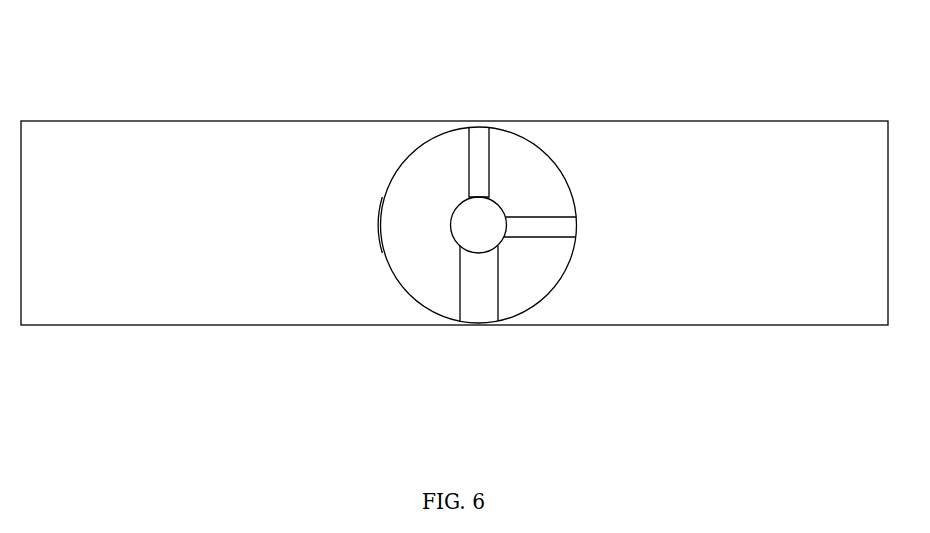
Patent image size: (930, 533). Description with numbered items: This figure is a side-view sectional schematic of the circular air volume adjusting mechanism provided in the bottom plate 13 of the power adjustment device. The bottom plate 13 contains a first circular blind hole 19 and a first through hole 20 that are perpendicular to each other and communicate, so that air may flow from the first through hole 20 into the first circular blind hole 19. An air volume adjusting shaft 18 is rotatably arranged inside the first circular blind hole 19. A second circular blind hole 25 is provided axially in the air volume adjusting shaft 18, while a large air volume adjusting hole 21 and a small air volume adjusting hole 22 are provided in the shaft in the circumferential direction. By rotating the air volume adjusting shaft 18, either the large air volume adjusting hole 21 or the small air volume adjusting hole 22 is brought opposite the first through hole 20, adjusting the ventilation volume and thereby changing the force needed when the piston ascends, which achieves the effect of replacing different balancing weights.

The bottom plate 13 is at (454, 190).
The air volume adjusting shaft 18 is at (670, 308).
The first circular blind hole 19 is at (222, 290).
The first through hole 20 is at (427, 172).
The large air volume adjusting hole 21 is at (551, 351).
The small air volume adjusting hole 22 is at (571, 116).
The second circular blind hole 25 is at (377, 304).